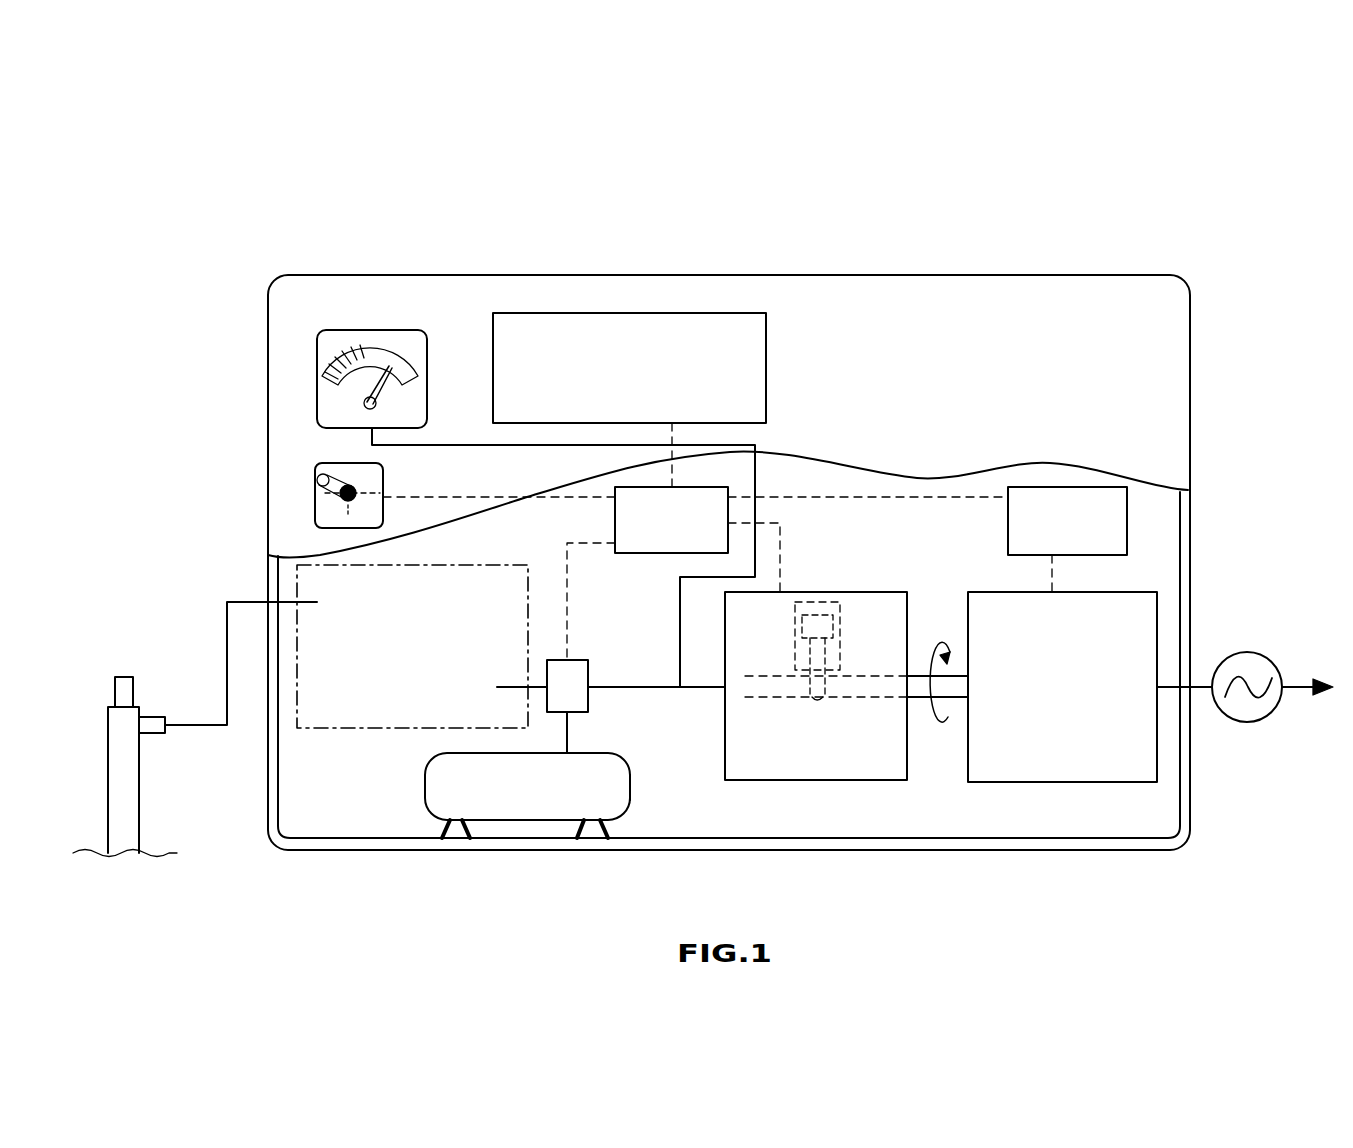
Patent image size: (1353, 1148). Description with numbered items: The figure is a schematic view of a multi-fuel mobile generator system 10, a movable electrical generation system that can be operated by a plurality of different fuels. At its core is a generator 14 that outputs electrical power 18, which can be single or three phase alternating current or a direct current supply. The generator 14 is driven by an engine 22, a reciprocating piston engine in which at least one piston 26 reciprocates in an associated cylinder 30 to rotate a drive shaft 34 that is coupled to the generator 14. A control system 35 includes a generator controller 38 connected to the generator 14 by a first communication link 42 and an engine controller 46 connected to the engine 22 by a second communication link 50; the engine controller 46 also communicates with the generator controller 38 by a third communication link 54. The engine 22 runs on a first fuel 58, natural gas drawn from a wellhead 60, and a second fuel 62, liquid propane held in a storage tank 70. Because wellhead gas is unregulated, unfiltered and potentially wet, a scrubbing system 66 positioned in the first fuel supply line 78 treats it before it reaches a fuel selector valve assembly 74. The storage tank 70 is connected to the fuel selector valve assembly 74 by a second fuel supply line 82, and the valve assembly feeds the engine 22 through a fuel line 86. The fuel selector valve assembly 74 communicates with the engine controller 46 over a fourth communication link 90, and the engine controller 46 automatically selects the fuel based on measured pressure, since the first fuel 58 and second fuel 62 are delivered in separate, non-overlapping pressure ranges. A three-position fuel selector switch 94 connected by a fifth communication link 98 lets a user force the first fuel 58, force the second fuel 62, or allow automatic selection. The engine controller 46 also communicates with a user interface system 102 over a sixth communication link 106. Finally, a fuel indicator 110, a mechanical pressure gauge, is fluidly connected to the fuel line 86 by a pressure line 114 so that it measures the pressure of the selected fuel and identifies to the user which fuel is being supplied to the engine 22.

The multi-fuel mobile generator system 10 is at (1016, 226).
The generator 14 is at (1075, 698).
The electrical power 18 is at (1237, 650).
The engine 22 is at (857, 592).
The piston 26 is at (820, 600).
The cylinder 30 is at (828, 657).
The drive shaft 34 is at (918, 672).
The control system 35 is at (968, 383).
The generator controller 38 is at (1076, 535).
The first communication link 42 is at (1052, 573).
The engine controller 46 is at (686, 532).
The second communication link 50 is at (762, 523).
The third communication link 54 is at (887, 497).
The first fuel 58 is at (136, 800).
The wellhead 60 is at (108, 740).
The second fuel 62 is at (515, 808).
The scrubbing system 66 is at (362, 728).
The storage tank 70 is at (630, 792).
The fuel selector valve assembly 74 is at (580, 673).
The first fuel supply line 78 is at (197, 723).
The second fuel supply line 82 is at (570, 737).
The fuel line 86 is at (663, 688).
The fourth communication link 90 is at (567, 572).
The fuel selector switch 94 is at (315, 505).
The fifth communication link 98 is at (590, 493).
The user interface system 102 is at (614, 380).
The sixth communication link 106 is at (673, 442).
The fuel indicator 110 is at (372, 330).
The pressure line 114 is at (452, 442).